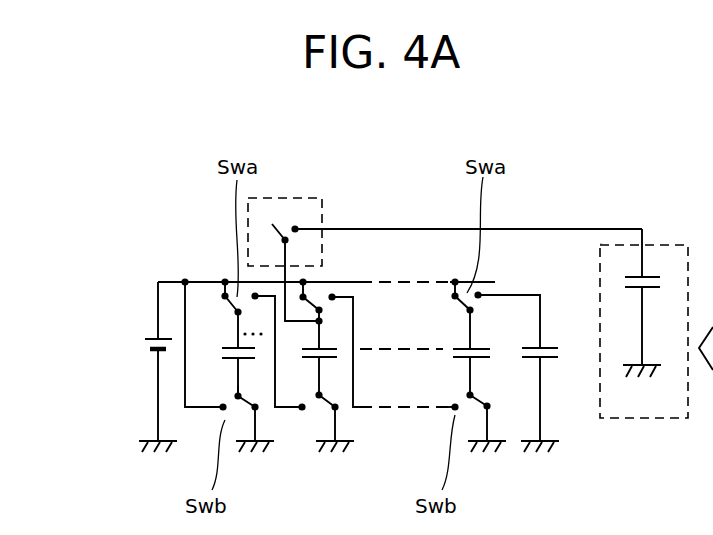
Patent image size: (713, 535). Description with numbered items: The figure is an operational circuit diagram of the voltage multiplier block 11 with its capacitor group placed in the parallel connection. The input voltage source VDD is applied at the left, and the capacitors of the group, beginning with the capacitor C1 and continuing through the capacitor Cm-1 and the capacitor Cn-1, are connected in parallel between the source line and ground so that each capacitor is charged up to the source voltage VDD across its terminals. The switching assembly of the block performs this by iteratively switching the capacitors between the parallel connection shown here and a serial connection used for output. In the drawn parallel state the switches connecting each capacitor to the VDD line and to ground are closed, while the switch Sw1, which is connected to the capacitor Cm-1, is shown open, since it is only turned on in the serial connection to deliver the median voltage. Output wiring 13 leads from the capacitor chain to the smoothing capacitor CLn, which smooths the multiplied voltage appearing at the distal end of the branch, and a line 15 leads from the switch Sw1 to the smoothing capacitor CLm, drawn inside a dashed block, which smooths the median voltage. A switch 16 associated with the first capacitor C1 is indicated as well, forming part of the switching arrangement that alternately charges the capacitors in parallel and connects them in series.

The voltage multiplier block 11 is at (576, 159).
The wire connecting capacitors to load capacitor CLn 13 is at (508, 293).
The output wire to load capacitor CLm 15 is at (587, 227).
The switch Swb of first capacitor 16 is at (238, 387).
The input voltage source VDD is at (138, 367).
The capacitor C1 is at (238, 367).
The switch Sw1 is at (298, 207).
The (m-1)-th capacitor Cm-1 is at (302, 362).
The capacitor Cn-1 is at (452, 367).
The smoothing capacitor CLn is at (553, 379).
The smoothing capacitor CLm is at (649, 315).